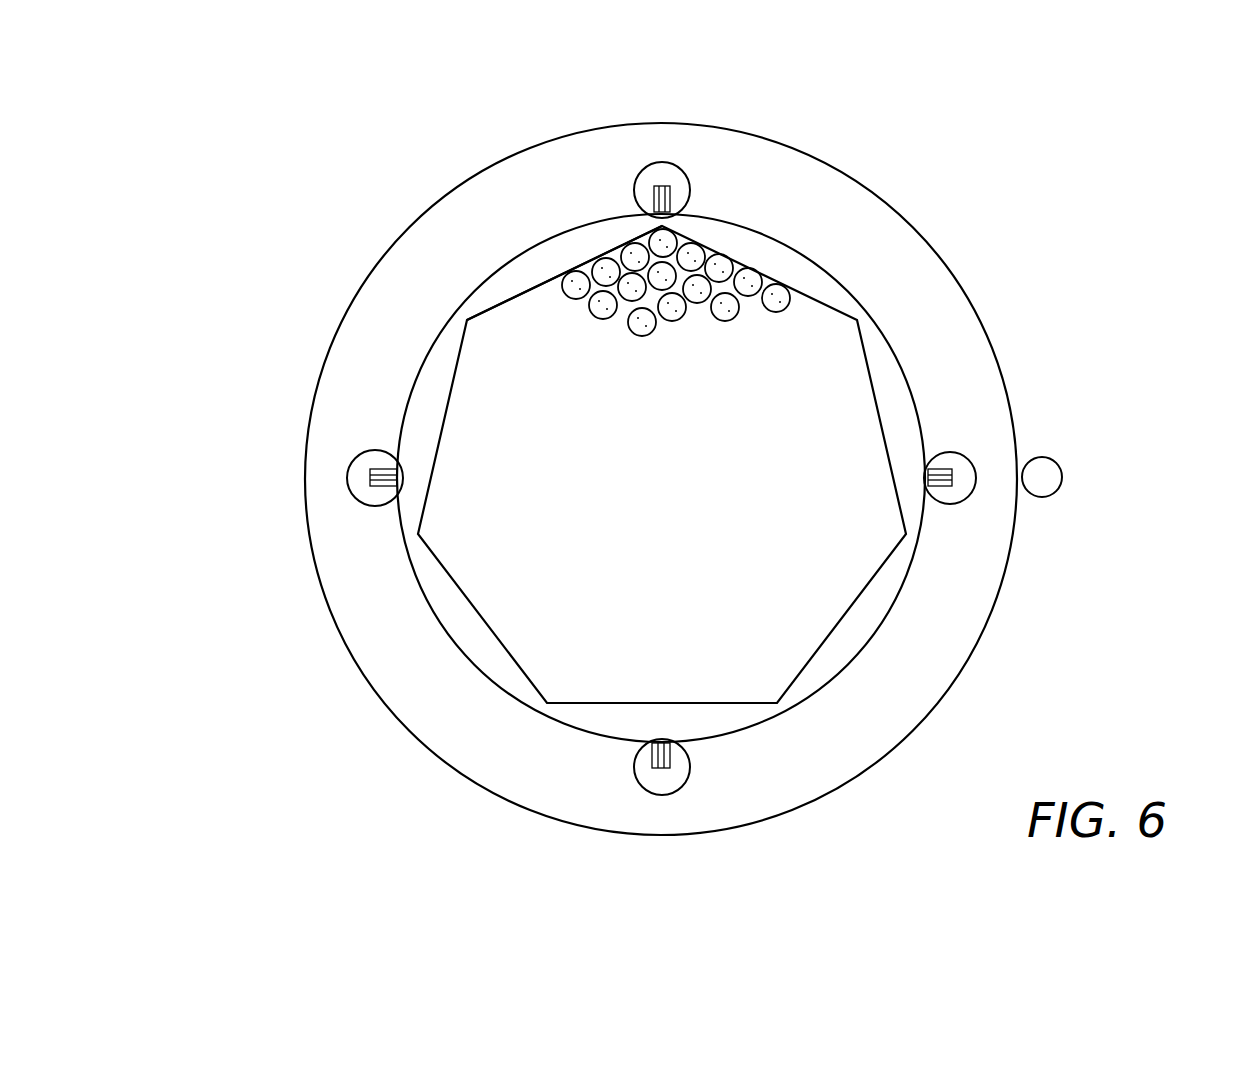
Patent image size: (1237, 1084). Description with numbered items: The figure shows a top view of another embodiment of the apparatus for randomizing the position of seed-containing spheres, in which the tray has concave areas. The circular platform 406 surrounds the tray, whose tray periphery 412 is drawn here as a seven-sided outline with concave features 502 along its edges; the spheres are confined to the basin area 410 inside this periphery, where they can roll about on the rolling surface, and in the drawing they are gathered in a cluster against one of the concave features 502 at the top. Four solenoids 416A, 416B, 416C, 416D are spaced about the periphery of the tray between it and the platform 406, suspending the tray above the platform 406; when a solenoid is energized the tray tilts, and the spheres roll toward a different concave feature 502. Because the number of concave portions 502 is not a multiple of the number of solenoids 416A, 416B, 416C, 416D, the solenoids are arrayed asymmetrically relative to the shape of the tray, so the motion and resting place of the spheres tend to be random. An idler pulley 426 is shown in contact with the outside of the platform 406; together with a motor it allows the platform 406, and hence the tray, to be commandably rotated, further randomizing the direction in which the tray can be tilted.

The platform 406 is at (842, 167).
The basin area 410 is at (662, 464).
The tray periphery 412 is at (802, 293).
The concave features 502 is at (485, 342).
The solenoid 416A is at (662, 795).
The solenoid 416B is at (362, 505).
The solenoid 416C is at (965, 455).
The solenoid 416D is at (690, 177).
The idler pulley 426 is at (1052, 457).